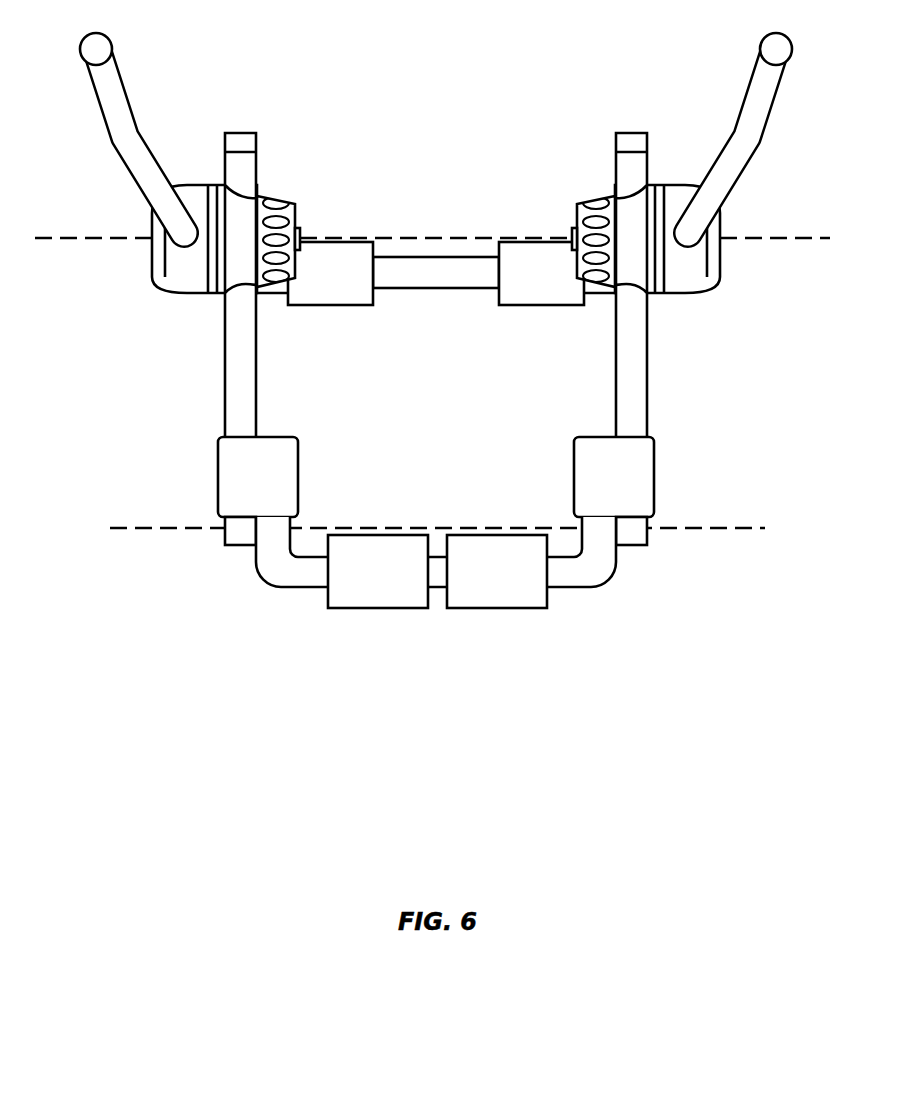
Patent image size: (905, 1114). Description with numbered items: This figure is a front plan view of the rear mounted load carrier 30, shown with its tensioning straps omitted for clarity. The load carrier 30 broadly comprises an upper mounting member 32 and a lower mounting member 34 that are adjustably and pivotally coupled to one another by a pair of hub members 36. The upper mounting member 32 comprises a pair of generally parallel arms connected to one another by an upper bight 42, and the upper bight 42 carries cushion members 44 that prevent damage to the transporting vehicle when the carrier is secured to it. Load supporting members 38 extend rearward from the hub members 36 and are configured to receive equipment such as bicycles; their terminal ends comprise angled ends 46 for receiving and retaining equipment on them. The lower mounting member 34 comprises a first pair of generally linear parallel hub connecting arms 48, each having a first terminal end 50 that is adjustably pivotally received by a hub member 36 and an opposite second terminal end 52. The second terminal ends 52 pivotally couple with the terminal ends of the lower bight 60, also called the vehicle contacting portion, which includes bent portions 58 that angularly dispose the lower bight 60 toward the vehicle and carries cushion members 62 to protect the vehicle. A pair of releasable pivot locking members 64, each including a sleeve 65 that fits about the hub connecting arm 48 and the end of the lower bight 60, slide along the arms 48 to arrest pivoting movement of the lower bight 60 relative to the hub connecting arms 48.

The rear mounted load carrier 30 is at (498, 74).
The upper mounting member 32 is at (434, 237).
The lower mounting member 34 is at (387, 651).
The hub member 36 is at (185, 283).
The load supporting member 38 is at (125, 153).
The upper bight 42 is at (431, 275).
The cushion member 44 is at (322, 258).
The angled end 46 is at (102, 92).
The hub connecting arm 48 is at (230, 400).
The first terminal end 50 is at (240, 132).
The second terminal end 52 is at (238, 548).
The bent portion 58 is at (277, 562).
The lower bight 60 is at (437, 577).
The cushion member 62 is at (380, 550).
The releasable pivot locking member 64 is at (237, 468).
The sleeve 65 is at (272, 477).